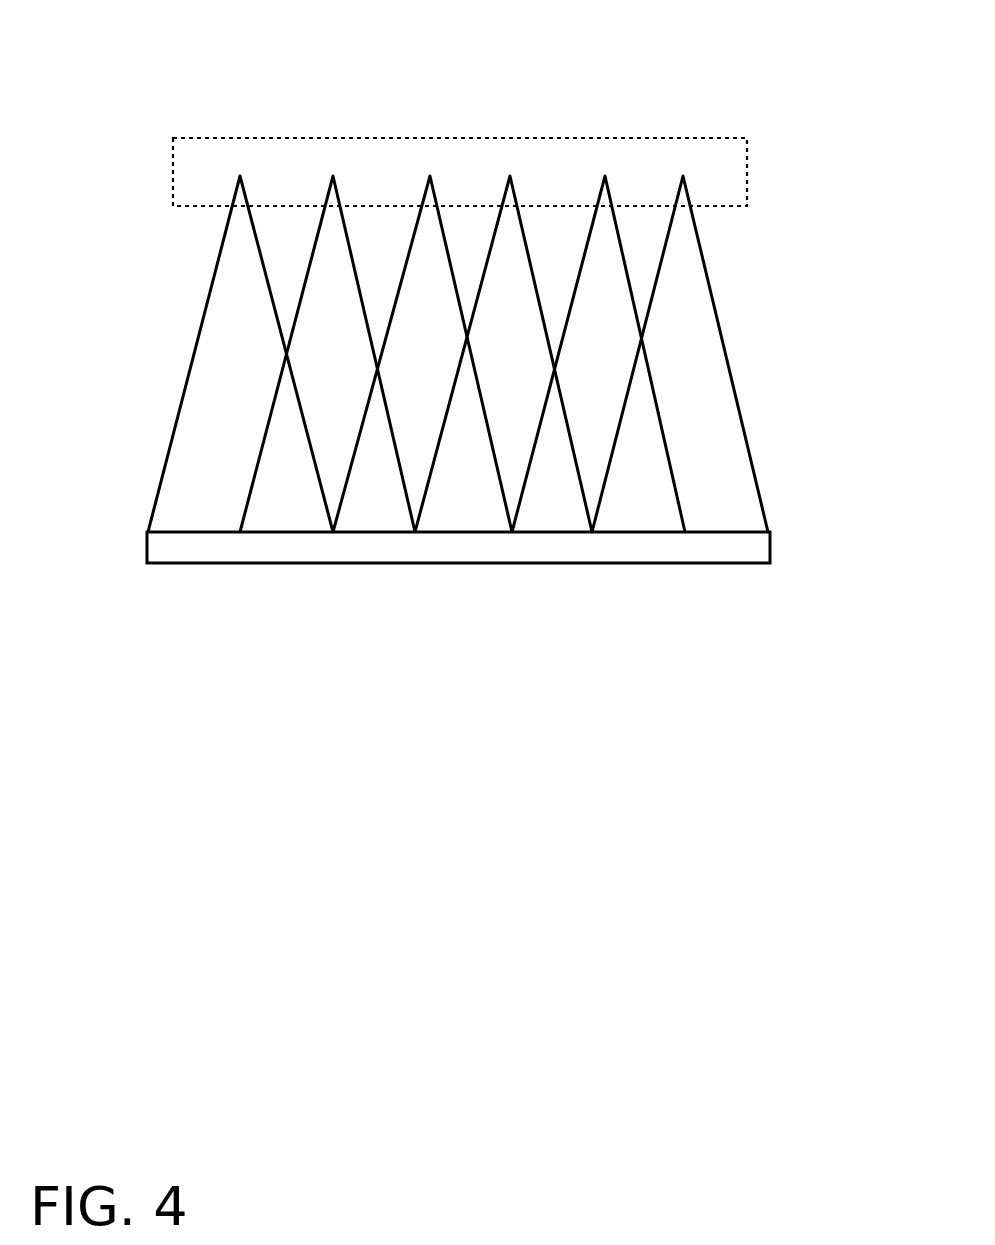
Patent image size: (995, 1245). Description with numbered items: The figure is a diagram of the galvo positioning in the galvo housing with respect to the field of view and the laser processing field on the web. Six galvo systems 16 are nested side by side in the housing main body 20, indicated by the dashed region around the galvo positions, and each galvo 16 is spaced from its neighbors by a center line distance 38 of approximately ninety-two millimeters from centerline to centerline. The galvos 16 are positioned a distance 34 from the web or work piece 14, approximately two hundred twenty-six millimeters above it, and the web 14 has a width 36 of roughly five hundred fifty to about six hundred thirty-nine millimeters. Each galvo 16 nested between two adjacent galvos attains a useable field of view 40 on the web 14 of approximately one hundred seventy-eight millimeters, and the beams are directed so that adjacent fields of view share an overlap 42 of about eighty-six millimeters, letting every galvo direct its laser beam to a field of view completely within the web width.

The work piece 14 is at (442, 550).
The galvo system 16 is at (496, 152).
The main body 20 is at (185, 162).
The distance 34 is at (824, 525).
The width 36 is at (152, 696).
The center line distance 38 is at (243, 129).
The useable field of view 40 is at (403, 586).
The overlap 42 is at (602, 584).